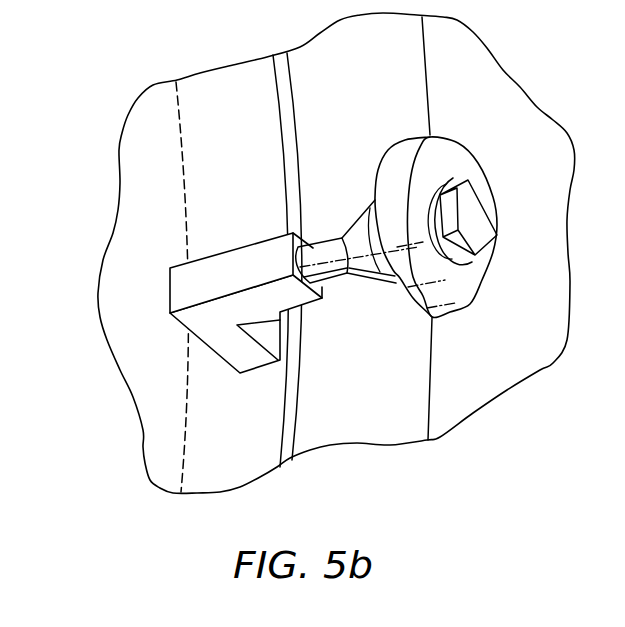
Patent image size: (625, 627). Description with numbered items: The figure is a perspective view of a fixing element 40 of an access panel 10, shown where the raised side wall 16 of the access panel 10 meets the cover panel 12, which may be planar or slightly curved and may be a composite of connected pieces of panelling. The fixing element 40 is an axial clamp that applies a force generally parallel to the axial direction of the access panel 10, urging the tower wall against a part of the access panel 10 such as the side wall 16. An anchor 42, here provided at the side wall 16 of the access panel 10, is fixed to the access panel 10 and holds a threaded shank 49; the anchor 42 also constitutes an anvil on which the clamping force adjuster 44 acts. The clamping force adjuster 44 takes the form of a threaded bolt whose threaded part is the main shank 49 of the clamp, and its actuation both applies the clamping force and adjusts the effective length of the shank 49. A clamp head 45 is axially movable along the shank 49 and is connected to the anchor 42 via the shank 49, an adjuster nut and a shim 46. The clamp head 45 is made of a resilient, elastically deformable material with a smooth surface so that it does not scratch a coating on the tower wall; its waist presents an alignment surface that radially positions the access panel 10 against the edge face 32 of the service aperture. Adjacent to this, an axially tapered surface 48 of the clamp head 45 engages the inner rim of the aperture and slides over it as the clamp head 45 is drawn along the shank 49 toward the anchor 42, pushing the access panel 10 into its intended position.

The access panel 10 is at (143, 228).
The cover panel 12 is at (89, 283).
The side wall 16 is at (228, 480).
The edge face 32 is at (358, 437).
The fixing element 40 is at (530, 344).
The anchor 42 is at (174, 317).
The clamping force adjuster 44 is at (488, 203).
The clamp head 45 is at (457, 310).
The shim 46 is at (470, 256).
The axially tapered surface 48 is at (378, 280).
The shank 49 is at (318, 245).